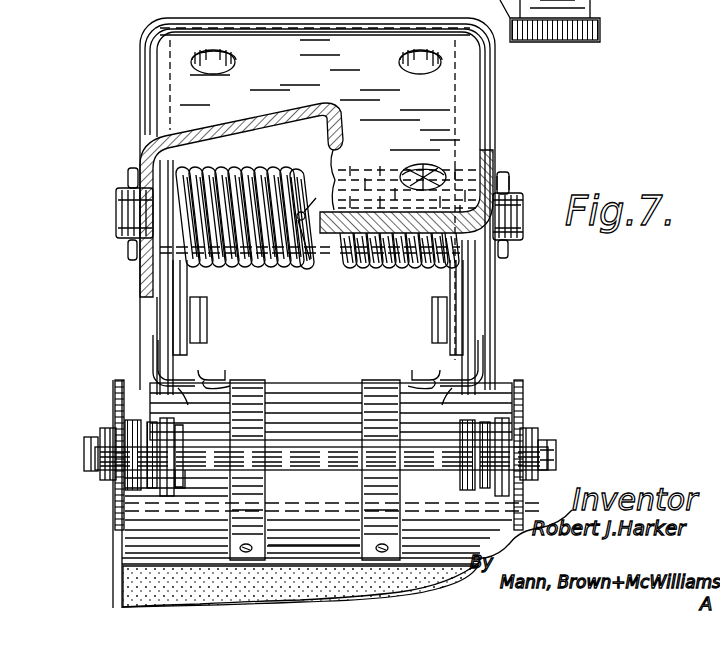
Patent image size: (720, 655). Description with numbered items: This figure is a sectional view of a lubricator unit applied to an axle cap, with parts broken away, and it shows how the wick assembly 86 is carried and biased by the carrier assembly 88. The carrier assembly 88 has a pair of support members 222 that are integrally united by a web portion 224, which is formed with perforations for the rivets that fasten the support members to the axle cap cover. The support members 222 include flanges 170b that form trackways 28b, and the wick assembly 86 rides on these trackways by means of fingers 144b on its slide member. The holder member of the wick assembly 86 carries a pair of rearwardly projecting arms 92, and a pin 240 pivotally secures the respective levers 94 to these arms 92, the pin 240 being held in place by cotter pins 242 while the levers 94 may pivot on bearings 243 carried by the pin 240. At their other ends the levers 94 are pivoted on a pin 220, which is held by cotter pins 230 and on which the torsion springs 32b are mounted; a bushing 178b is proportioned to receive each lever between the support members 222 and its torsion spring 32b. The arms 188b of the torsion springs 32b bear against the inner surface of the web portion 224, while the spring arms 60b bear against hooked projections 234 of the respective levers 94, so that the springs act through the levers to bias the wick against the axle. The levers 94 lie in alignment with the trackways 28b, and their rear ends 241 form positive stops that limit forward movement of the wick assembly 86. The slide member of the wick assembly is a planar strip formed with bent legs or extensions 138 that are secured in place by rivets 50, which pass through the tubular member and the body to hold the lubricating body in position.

The web portion 224 is at (338, 60).
The carrier assembly 88 is at (128, 120).
The bushing 178b is at (316, 200).
The cotter pin 230 is at (505, 190).
The pin 220 is at (525, 200).
The support member 222 is at (140, 278).
The lever 94 is at (160, 304).
The spring arm 60b is at (186, 290).
The torsion spring 32b is at (271, 264).
The arm of torsion spring 188b is at (313, 243).
The hooked projection 234 is at (205, 335).
The trackway 28b is at (200, 372).
The finger 144b is at (165, 382).
The flange 170b is at (452, 390).
The rear end of lever 241 is at (182, 392).
The arm 92 is at (117, 392).
The cotter pin 242 is at (104, 432).
The pin 240 is at (548, 452).
The bearing 243 is at (175, 476).
The wick assembly 86 is at (96, 572).
The leg or extension 138 is at (350, 528).
The rivet 50 is at (360, 550).